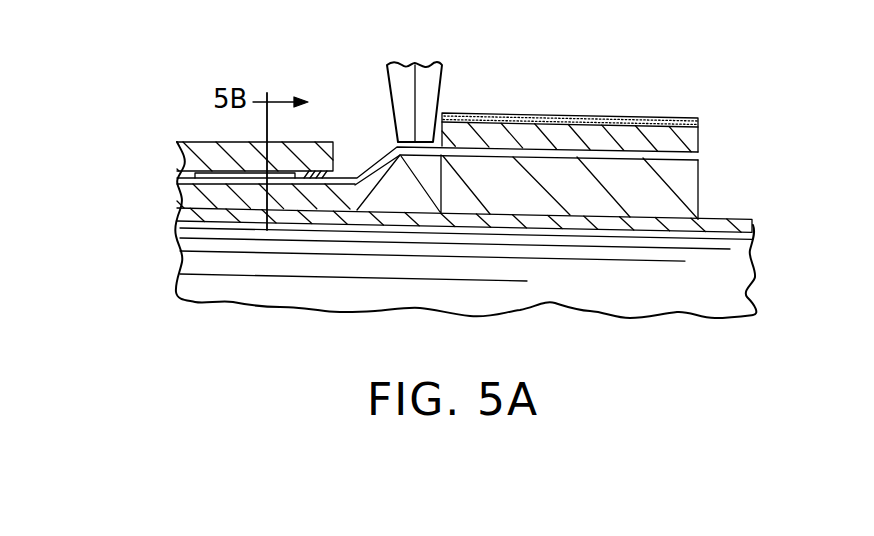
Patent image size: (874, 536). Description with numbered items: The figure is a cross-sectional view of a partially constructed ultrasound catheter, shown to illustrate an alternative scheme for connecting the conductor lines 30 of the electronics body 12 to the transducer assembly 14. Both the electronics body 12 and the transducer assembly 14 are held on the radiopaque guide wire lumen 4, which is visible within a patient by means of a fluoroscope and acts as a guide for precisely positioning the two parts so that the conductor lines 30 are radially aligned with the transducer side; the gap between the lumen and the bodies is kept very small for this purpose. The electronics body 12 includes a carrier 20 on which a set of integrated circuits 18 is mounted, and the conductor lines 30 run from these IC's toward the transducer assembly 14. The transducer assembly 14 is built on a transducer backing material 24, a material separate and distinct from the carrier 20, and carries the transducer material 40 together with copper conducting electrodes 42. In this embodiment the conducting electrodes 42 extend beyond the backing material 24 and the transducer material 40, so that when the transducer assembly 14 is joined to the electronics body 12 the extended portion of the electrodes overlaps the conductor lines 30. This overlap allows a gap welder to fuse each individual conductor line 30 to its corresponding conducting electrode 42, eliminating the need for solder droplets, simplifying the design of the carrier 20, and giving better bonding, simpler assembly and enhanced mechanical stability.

The radiopaque guide wire lumen 4 is at (742, 228).
The electronics body 12 is at (222, 139).
The transducer assembly 14 is at (611, 93).
The integrated circuits 18 is at (302, 147).
The carrier 20 is at (356, 181).
The transducer backing material 24 is at (690, 178).
The conductor lines 30 is at (390, 150).
The transducer material 40 is at (503, 128).
The conducting electrodes 42 is at (700, 152).